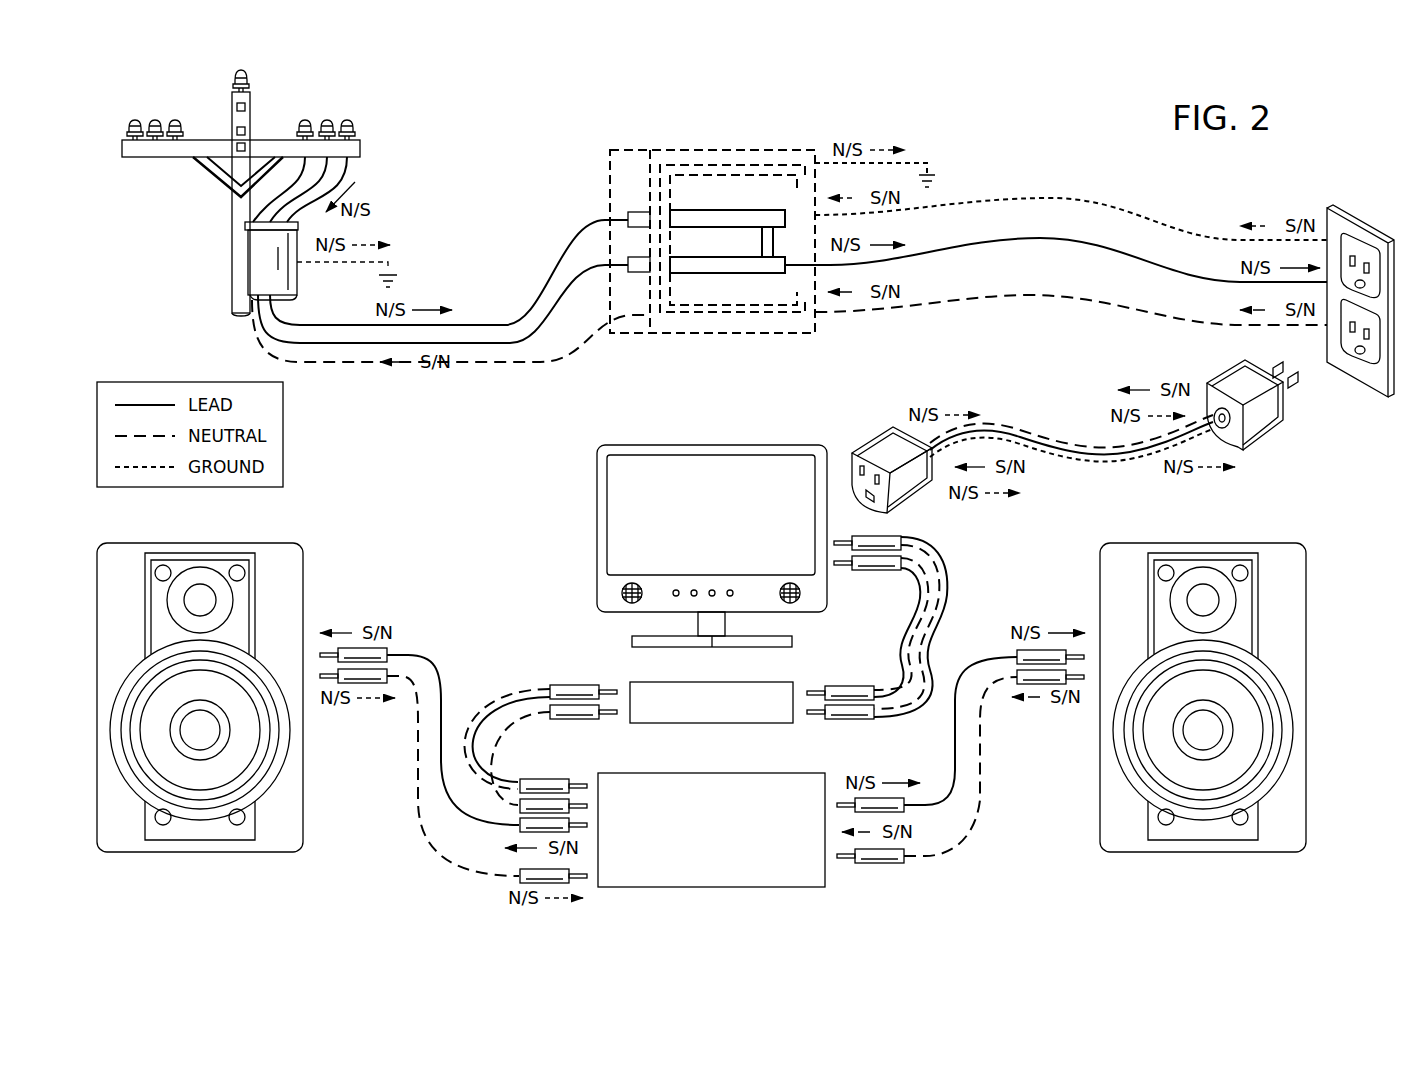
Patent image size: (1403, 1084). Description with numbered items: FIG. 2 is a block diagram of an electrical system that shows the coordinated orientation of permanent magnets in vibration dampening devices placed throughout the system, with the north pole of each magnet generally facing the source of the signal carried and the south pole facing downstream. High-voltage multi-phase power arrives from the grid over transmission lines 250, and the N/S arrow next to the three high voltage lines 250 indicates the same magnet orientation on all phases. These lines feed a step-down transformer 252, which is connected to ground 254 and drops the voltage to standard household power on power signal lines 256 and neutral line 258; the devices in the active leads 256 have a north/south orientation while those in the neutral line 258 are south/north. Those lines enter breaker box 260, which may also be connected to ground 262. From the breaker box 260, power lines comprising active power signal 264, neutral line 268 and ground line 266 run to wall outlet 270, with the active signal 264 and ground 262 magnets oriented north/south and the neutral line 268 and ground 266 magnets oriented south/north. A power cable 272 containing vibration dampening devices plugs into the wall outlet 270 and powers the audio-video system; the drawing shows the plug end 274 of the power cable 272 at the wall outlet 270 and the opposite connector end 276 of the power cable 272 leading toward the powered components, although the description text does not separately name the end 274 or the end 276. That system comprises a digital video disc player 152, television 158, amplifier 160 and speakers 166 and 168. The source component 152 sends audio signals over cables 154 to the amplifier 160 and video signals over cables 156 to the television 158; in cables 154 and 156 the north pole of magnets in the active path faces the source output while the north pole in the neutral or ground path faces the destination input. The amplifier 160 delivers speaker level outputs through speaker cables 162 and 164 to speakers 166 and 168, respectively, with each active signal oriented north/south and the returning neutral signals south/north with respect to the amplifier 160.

The digital video disc player 152 is at (712, 724).
The cables 154 is at (522, 690).
The cables 156 is at (847, 685).
The television 158 is at (597, 538).
The amplifier 160 is at (690, 868).
The cables 162 is at (450, 855).
The cables 164 is at (880, 866).
The speaker 166 is at (203, 853).
The speaker 168 is at (1203, 853).
The transmission lines 250 is at (232, 108).
The step-down transformer 252 is at (245, 262).
The ground 254 is at (400, 278).
The power signal lines 256 is at (580, 228).
The neutral line 258 is at (345, 363).
The breaker box 260 is at (712, 148).
The ground 262 is at (940, 181).
The active power signal 264 is at (1040, 246).
The ground line 266 is at (1133, 212).
The neutral line 268 is at (1005, 298).
The wall outlet 270 is at (1362, 225).
The power cable 272 is at (1055, 407).
The plug 274 is at (1258, 430).
The receptacle end 276 is at (865, 437).